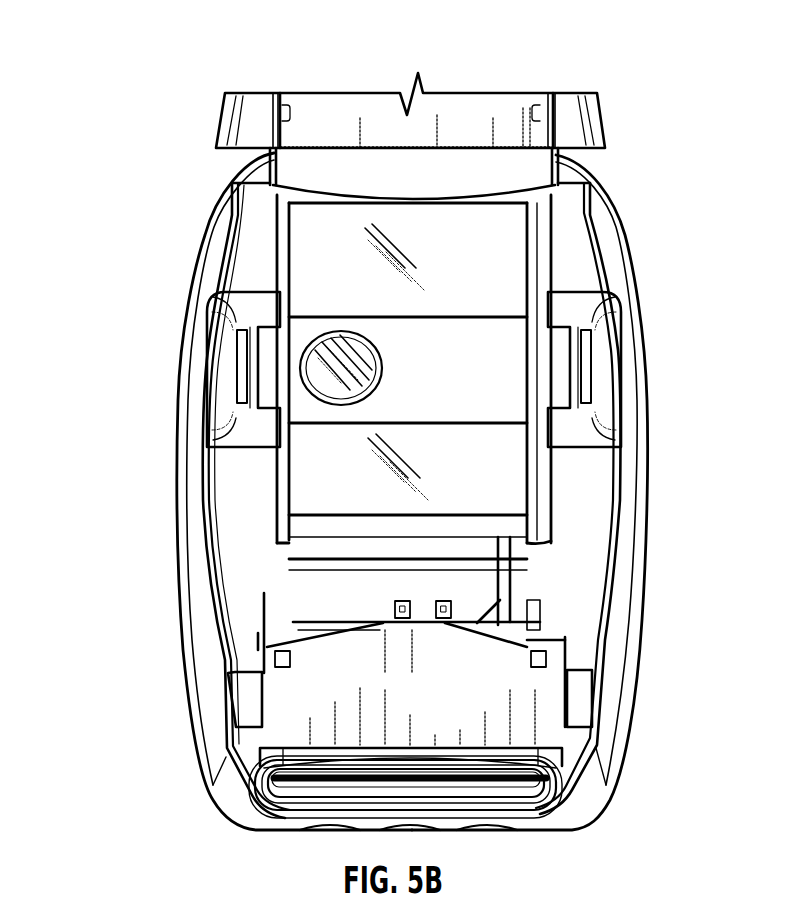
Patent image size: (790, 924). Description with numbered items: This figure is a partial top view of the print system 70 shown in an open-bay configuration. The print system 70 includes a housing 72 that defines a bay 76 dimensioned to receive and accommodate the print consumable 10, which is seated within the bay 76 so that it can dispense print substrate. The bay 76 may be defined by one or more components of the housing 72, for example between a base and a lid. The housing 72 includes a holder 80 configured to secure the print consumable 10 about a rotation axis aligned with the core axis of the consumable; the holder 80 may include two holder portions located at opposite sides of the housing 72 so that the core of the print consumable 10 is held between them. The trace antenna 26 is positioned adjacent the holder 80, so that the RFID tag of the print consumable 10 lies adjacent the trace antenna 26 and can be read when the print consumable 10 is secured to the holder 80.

The print system 70 is at (117, 44).
The print consumable 10 is at (289, 252).
The trace antenna 26 is at (245, 356).
The housing 72 is at (173, 466).
The holder 80 is at (600, 372).
The bay 76 is at (552, 568).